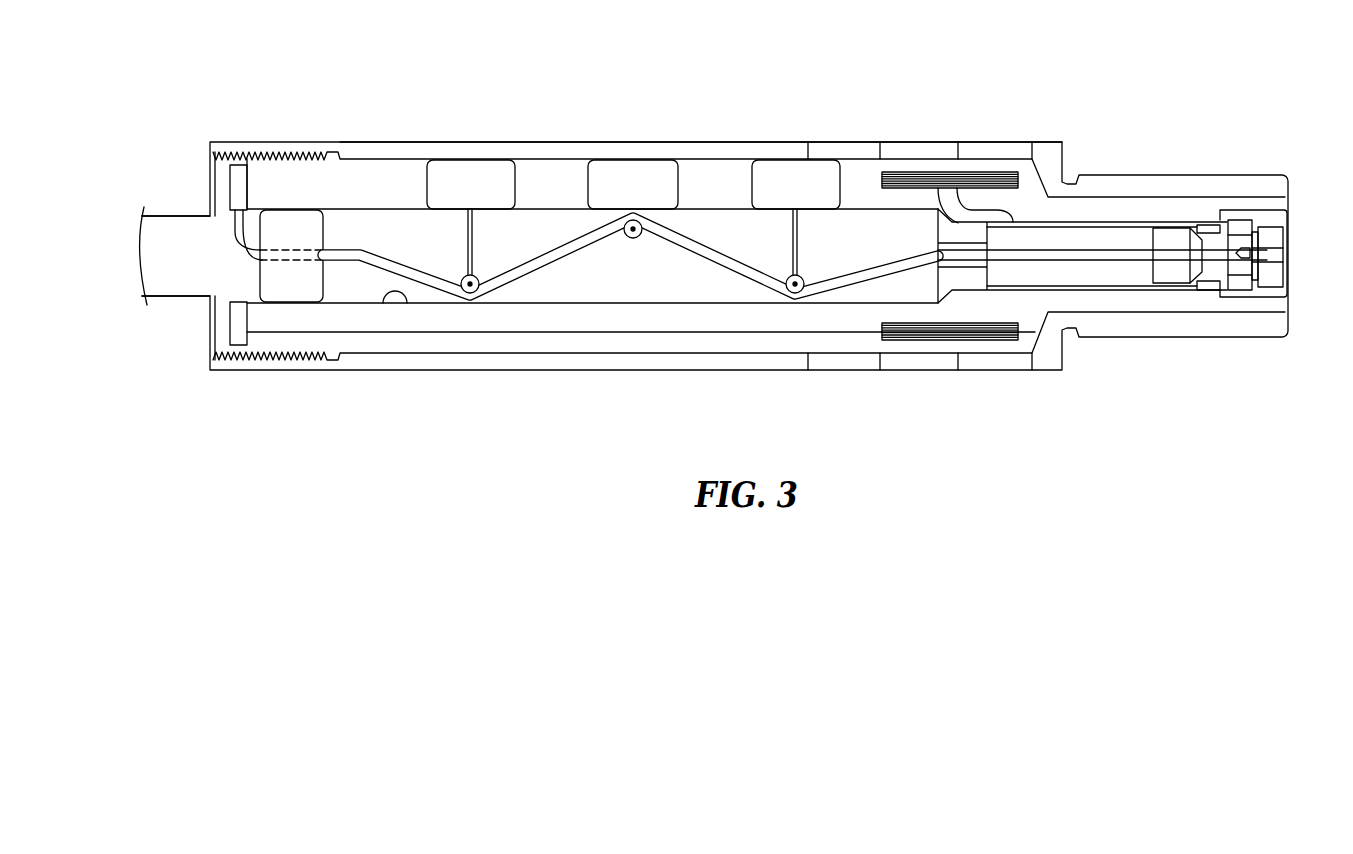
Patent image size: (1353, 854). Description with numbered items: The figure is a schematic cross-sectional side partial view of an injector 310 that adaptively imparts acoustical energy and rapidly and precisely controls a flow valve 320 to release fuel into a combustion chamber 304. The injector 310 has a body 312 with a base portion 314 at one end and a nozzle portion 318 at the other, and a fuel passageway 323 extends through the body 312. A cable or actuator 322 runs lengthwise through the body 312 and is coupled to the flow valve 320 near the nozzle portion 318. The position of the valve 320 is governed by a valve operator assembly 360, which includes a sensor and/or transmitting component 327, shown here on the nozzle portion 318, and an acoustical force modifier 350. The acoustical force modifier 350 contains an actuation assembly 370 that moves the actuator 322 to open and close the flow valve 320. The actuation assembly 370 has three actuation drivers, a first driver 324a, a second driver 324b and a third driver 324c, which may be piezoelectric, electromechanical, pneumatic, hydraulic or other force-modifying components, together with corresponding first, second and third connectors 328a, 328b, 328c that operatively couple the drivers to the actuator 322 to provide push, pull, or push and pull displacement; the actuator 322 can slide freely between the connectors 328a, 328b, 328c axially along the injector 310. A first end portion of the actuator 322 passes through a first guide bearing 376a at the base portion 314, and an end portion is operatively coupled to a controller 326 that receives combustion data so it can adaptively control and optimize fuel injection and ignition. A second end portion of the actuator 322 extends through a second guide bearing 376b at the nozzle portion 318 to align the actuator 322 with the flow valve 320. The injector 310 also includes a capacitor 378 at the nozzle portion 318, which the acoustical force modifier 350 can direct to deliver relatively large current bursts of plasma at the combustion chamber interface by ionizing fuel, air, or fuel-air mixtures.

The combustion chamber 304 is at (1342, 222).
The injector 310 is at (378, 75).
The body 312 is at (327, 181).
The base portion 314 is at (282, 400).
The nozzle portion 318 is at (1100, 375).
The flow valve 320 is at (1216, 240).
The actuator 322 is at (677, 230).
The fuel passageway 323 is at (403, 305).
The first driver 324a is at (457, 171).
The second driver 324b is at (633, 173).
The third driver 324c is at (793, 173).
The controller 326 is at (248, 183).
The sensor 327 is at (1288, 279).
The first connector 328a is at (476, 240).
The second connector 328b is at (633, 240).
The third connector 328c is at (797, 252).
The acoustical force modifier 350 is at (432, 233).
The valve operator assembly 360 is at (188, 183).
The actuation assembly 370 is at (553, 285).
The first guide bearing 376a is at (327, 303).
The second guide bearing 376b is at (937, 240).
The capacitor 378 is at (967, 343).